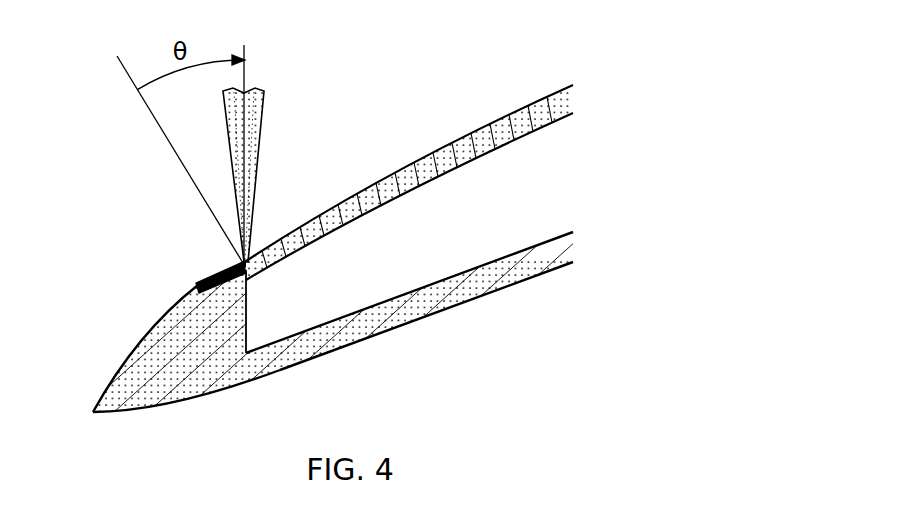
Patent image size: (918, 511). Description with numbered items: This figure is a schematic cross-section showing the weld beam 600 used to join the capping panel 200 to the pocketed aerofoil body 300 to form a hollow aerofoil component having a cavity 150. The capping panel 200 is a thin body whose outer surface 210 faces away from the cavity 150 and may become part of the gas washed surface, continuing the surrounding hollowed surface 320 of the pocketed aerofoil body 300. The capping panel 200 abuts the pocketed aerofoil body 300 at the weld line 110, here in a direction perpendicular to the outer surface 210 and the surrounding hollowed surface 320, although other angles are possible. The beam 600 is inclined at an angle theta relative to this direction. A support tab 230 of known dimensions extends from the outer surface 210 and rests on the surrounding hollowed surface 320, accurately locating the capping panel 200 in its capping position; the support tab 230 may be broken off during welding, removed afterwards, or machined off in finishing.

The weld line 110 is at (237, 261).
The cavity 150 is at (502, 203).
The capping panel 200 is at (477, 128).
The outer surface 210 is at (347, 200).
The support tab 230 is at (202, 286).
The pocketed aerofoil body 300 is at (420, 320).
The surrounding hollowed surface 320 is at (142, 343).
The beam 600 is at (262, 130).